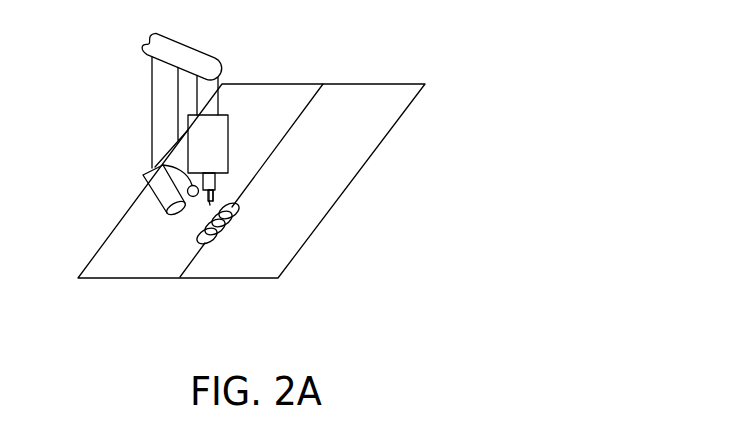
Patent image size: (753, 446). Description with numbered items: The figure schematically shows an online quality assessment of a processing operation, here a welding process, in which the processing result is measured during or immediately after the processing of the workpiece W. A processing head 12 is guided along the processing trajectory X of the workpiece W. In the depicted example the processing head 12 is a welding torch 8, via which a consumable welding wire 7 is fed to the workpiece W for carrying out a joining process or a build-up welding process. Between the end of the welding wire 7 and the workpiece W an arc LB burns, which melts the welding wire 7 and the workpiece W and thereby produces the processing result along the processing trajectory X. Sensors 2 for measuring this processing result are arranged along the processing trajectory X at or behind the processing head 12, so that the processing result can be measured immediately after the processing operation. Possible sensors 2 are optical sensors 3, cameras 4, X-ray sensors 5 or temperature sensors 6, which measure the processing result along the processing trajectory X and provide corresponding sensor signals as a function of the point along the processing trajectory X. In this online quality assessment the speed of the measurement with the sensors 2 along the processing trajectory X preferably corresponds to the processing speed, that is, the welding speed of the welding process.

The sensors 2 is at (127, 124).
The optical sensors 3 is at (108, 191).
The cameras 4 is at (108, 191).
The X-ray sensors 5 is at (162, 185).
The temperature sensors 6 is at (153, 166).
The welding wire 7 is at (215, 198).
The welding torch 8 is at (214, 133).
The processing head 12 is at (242, 110).
The workpiece W is at (374, 103).
The processing trajectory X is at (315, 92).
The arc LB is at (210, 205).